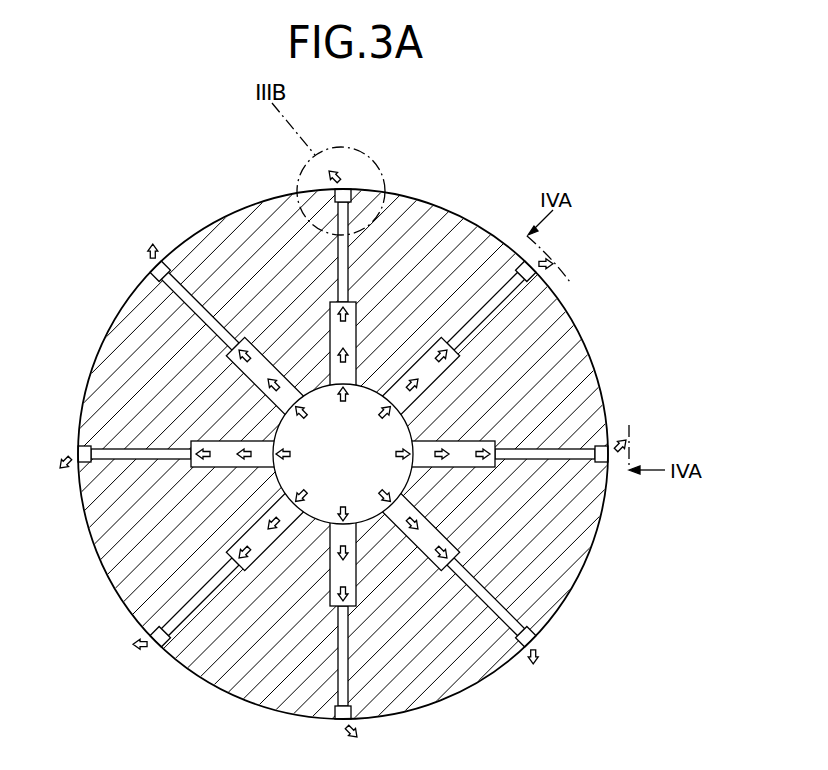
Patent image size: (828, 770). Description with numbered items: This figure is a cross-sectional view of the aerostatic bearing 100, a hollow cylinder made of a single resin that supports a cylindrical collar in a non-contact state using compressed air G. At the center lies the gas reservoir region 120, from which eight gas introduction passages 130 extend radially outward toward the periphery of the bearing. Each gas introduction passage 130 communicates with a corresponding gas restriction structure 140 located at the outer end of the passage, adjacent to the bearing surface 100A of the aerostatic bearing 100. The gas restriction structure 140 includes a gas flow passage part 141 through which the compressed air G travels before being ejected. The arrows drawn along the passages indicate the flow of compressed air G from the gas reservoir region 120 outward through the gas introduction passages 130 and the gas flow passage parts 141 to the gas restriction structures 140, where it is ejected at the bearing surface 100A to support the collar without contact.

The aerostatic bearing 100 is at (414, 436).
The bearing surface 100A is at (577, 580).
The gas reservoir region 120 is at (360, 489).
The gas introduction passage 130 is at (337, 333).
The gas restriction structure 140 is at (352, 196).
The gas flow passage part 141 is at (348, 266).
The compressed air G is at (343, 391).